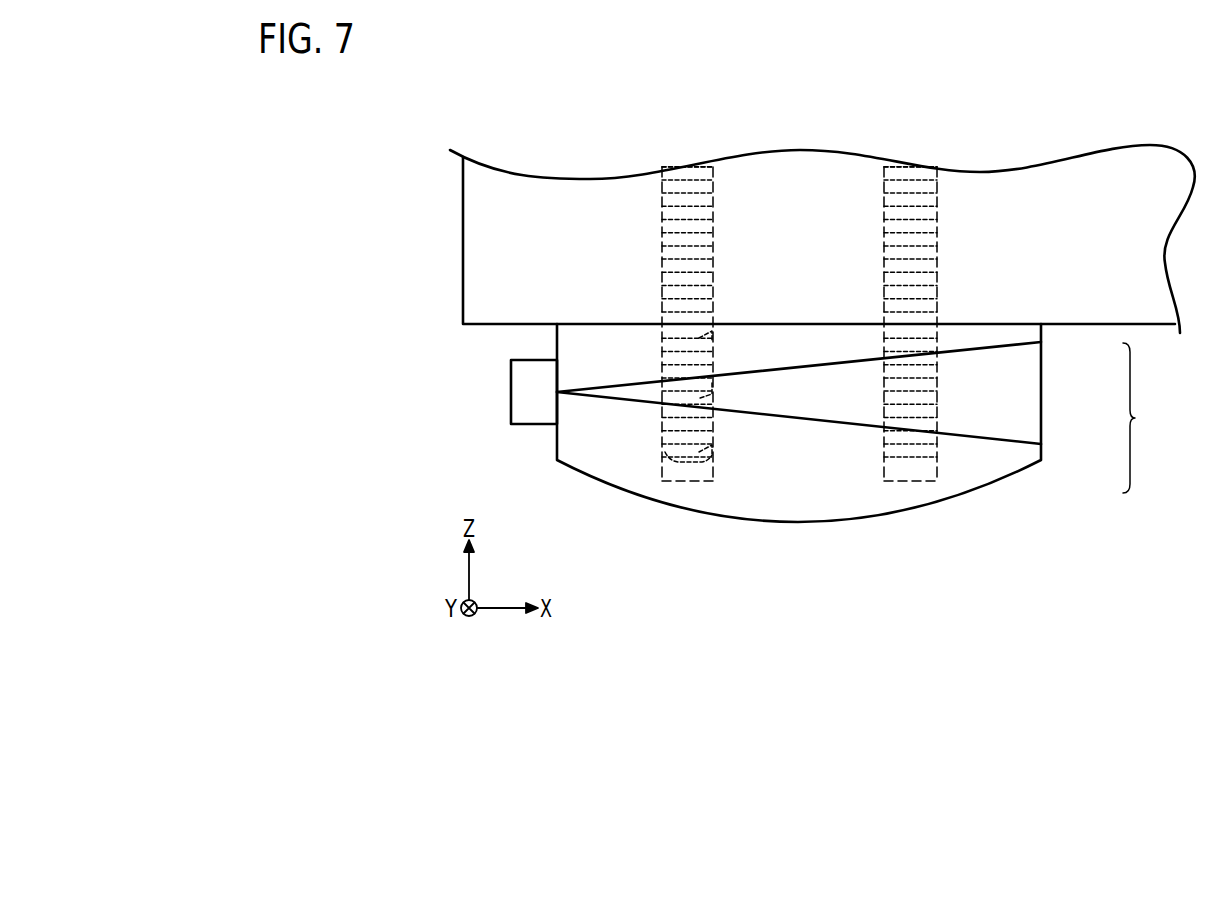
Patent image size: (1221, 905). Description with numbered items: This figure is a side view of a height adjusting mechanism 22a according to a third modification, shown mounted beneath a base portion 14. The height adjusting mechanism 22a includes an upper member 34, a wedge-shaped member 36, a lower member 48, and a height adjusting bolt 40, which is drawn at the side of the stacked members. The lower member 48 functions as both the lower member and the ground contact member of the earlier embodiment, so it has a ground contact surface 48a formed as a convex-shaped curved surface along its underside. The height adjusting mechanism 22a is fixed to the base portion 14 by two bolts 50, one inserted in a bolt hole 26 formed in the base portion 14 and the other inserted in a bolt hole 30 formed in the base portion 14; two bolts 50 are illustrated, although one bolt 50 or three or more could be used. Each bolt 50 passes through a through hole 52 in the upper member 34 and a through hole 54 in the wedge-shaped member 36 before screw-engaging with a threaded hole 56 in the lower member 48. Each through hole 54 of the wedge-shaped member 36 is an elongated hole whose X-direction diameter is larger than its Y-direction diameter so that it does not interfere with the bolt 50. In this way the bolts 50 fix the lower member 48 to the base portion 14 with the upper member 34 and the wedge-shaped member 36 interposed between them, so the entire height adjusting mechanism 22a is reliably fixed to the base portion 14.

The base portion 14 is at (480, 235).
The bolt hole 26 is at (699, 208).
The bolt hole 30 is at (922, 208).
The height adjusting bolt 40 is at (530, 388).
The bolt 50 is at (685, 188).
The through hole 52 is at (713, 345).
The through hole 54 is at (713, 398).
The threaded hole 56 is at (713, 455).
The upper member 34 is at (1010, 335).
The wedge-shaped member 36 is at (1017, 427).
The lower member 48 is at (1007, 460).
The ground contact surface 48a is at (782, 523).
The height adjusting mechanism 22a is at (1151, 418).